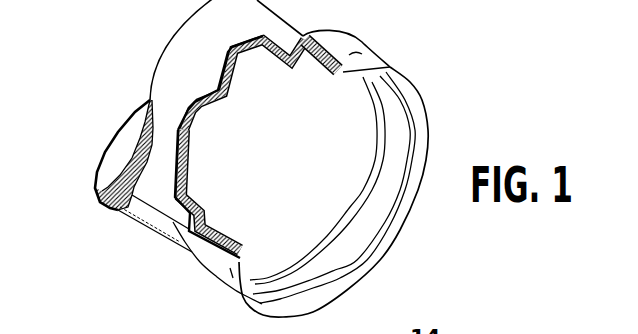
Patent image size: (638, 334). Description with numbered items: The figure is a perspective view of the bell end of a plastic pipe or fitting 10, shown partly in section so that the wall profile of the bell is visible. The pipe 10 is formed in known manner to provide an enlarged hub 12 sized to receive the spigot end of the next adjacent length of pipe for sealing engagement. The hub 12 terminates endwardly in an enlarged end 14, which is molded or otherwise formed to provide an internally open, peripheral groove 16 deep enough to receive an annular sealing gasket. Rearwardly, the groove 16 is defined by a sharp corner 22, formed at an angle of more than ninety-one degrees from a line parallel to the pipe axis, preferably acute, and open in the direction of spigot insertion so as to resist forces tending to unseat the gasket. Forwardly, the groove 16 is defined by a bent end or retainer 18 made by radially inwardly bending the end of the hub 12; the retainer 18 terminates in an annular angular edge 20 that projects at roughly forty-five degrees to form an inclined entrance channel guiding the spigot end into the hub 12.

The plastic pipe or fitting 10 is at (136, 230).
The enlarged hub 12 is at (166, 250).
The enlarged end 14 is at (227, 283).
The peripheral groove 16 is at (320, 64).
The retainer 18 is at (377, 54).
The annular angular edge 20 is at (343, 77).
The sharp corner 22 is at (215, 222).